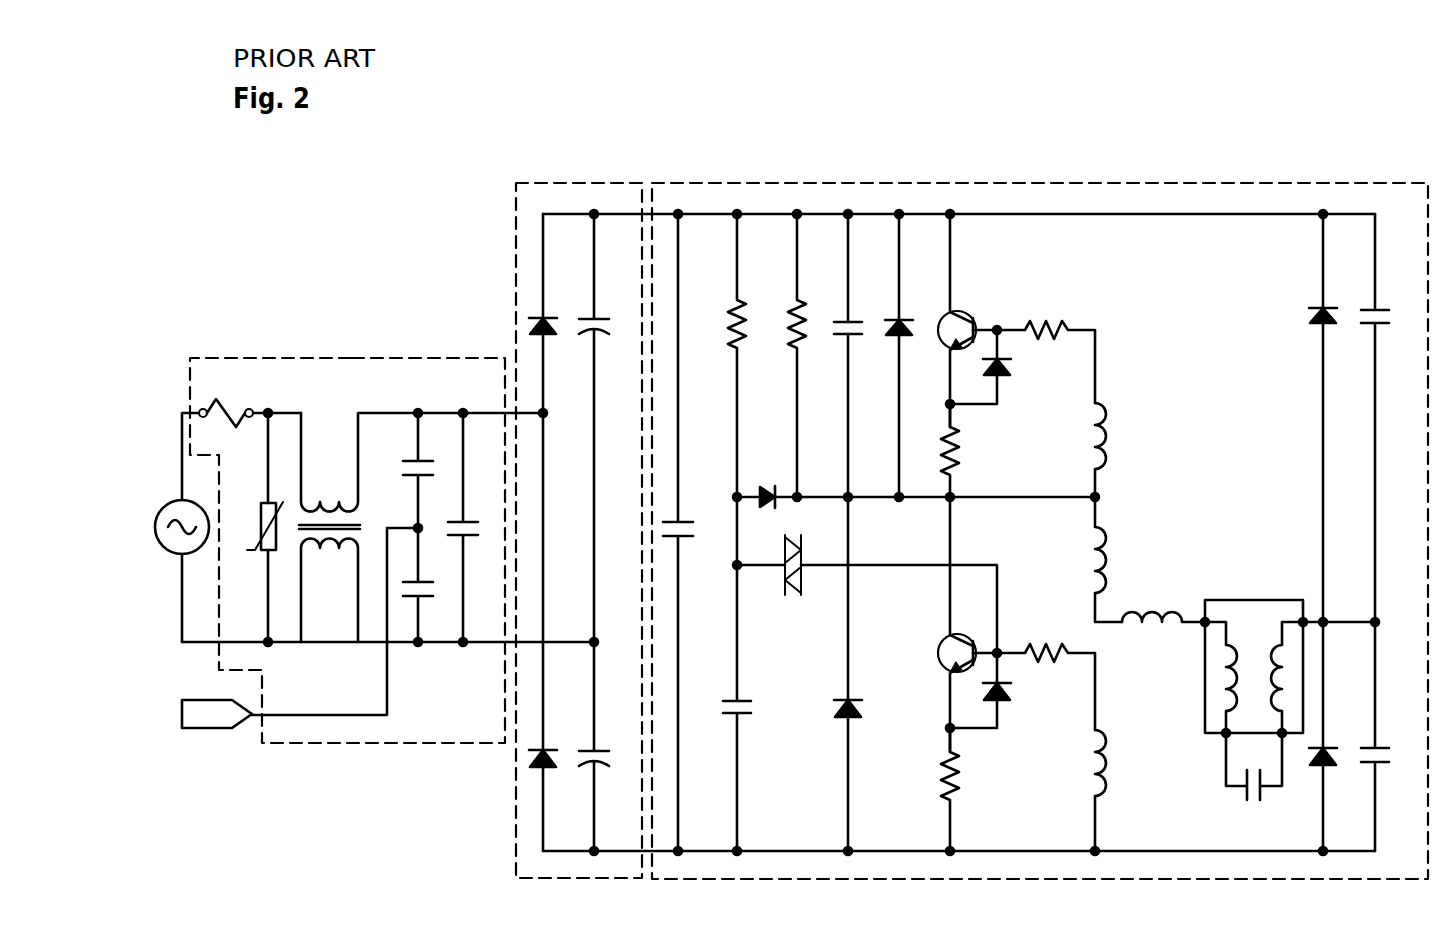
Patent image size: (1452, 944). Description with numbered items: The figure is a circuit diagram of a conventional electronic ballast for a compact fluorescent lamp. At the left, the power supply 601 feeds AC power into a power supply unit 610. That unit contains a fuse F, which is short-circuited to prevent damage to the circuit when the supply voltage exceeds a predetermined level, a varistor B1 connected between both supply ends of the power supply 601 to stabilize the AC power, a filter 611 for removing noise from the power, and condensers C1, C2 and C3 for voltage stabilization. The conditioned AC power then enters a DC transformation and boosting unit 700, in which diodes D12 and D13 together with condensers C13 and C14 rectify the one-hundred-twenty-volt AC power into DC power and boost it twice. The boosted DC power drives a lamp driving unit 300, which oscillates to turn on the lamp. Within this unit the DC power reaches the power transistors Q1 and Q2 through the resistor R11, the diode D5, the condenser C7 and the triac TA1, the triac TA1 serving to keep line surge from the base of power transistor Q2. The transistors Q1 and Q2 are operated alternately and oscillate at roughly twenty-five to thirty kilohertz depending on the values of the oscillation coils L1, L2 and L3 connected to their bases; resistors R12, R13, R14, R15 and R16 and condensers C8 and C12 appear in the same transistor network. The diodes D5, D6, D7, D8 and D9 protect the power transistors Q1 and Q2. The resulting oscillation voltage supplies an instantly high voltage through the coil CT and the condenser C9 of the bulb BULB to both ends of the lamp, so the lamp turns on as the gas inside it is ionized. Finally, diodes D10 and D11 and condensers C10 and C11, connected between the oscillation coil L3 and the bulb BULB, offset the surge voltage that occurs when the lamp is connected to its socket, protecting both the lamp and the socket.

The power supply 601 is at (169, 506).
The power supply unit 610 is at (352, 358).
The filter 611 is at (328, 500).
The DC transformation and boosting unit 700 is at (577, 183).
The lamp driving unit 300 is at (1070, 183).
The fuse F is at (226, 400).
The varistor B1 is at (257, 527).
The condenser C1 is at (426, 470).
The condenser C2 is at (426, 585).
The condenser C3 is at (471, 527).
The diode D12 is at (559, 274).
The diode D13 is at (559, 592).
The condenser C13 is at (609, 428).
The condenser C14 is at (608, 746).
The condenser C12 is at (693, 532).
The resistor R11 is at (754, 389).
The resistor R12 is at (814, 355).
The condenser C7 is at (751, 708).
The condenser C8 is at (857, 457).
The diode D5 is at (767, 482).
The diode D6 is at (908, 355).
The diode D7 is at (863, 774).
The triac TA1 is at (792, 579).
The power transistor Q1 is at (963, 320).
The power transistor Q2 is at (963, 680).
The resistor R13 is at (969, 519).
The resistor R14 is at (1034, 350).
The resistor R15 is at (969, 789).
The resistor R16 is at (1034, 675).
The diode D8 is at (993, 367).
The diode D9 is at (993, 690).
The oscillation coil L1 is at (1114, 450).
The oscillation coil L2 is at (1114, 559).
The oscillation coil L3 is at (1114, 790).
The coil CT is at (1163, 601).
The bulb BULB is at (1253, 606).
The condenser C9 is at (1254, 779).
The diode D10 is at (1340, 418).
The diode D11 is at (1339, 736).
The condenser C10 is at (1390, 736).
The condenser C11 is at (1390, 418).